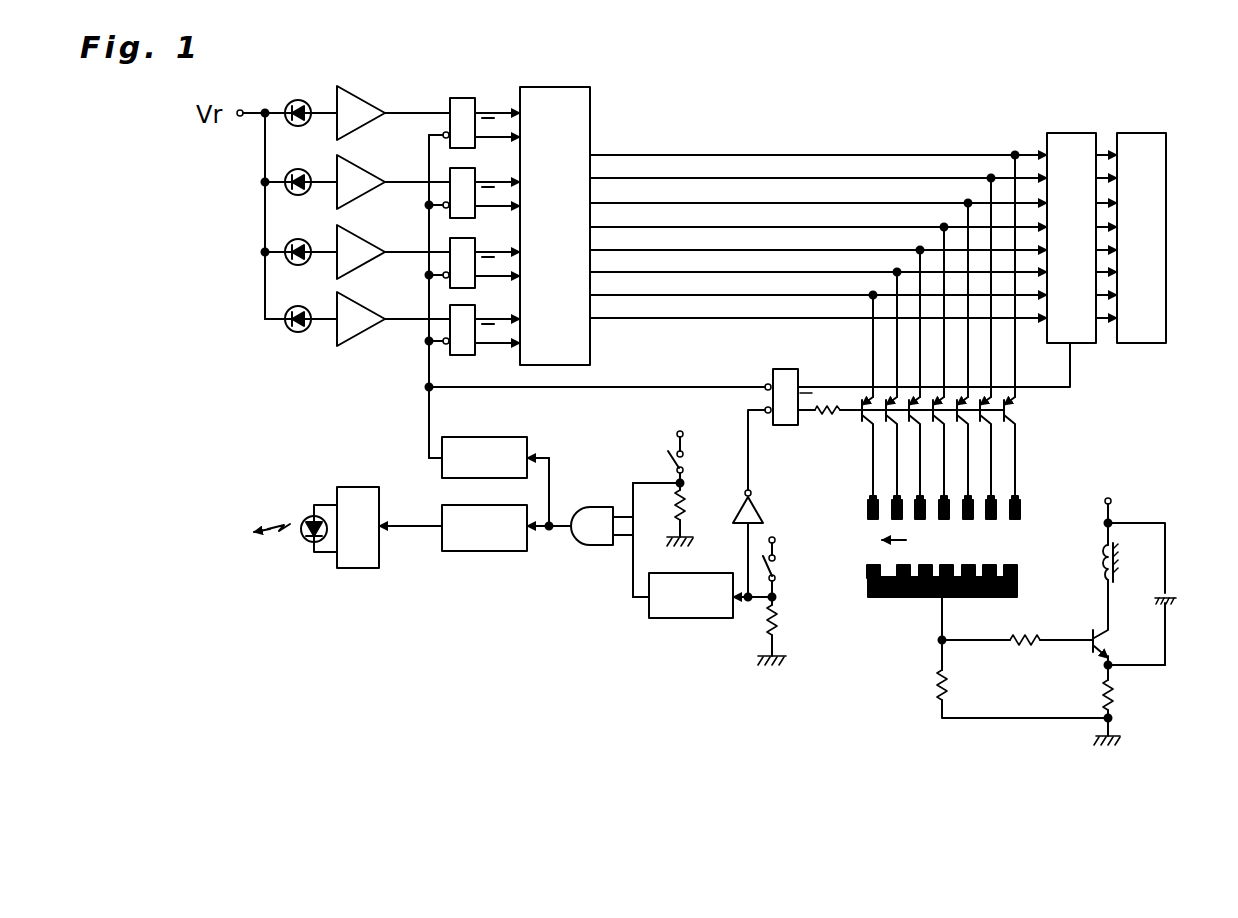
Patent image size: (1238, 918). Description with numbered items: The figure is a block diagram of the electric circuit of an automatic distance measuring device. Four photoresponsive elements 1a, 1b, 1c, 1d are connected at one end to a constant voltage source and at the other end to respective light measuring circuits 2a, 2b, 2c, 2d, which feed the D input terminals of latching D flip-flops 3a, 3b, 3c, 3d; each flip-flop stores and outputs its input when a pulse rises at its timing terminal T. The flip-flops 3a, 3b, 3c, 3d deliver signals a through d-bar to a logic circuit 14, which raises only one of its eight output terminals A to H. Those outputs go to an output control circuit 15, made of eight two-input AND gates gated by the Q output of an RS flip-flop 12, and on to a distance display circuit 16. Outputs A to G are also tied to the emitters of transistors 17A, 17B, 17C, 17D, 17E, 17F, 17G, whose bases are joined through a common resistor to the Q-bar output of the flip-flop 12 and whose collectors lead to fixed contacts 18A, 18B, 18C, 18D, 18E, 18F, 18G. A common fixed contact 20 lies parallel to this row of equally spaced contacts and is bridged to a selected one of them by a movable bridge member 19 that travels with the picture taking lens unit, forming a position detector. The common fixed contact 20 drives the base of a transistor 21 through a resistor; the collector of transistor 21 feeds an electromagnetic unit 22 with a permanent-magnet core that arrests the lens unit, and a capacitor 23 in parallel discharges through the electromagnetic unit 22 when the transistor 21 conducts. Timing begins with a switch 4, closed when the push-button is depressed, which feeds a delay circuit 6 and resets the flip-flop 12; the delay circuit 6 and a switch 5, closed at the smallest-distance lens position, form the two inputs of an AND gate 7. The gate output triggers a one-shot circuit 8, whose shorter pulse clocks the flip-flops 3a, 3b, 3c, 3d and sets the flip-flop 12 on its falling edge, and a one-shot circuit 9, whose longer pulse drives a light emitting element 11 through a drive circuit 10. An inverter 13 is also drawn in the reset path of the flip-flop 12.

The photoresponsive element 1a is at (306, 101).
The photoresponsive element 1b is at (306, 170).
The photoresponsive element 1c is at (306, 240).
The photoresponsive element 1d is at (306, 307).
The light measuring circuit 2a is at (364, 105).
The light measuring circuit 2b is at (364, 175).
The light measuring circuit 2c is at (364, 245).
The light measuring circuit 2d is at (364, 312).
The latching D flip-flop 3a is at (448, 147).
The latching D flip-flop 3b is at (448, 217).
The latching D flip-flop 3c is at (448, 288).
The latching D flip-flop 3d is at (448, 357).
The switch 4 is at (775, 572).
The switch 5 is at (687, 449).
The delay circuit 6 is at (690, 618).
The AND gate 7 is at (583, 546).
The one-shot circuit 8 is at (508, 437).
The one-shot circuit 9 is at (486, 552).
The drive circuit 10 is at (358, 568).
The light emitting element 11 is at (305, 545).
The RS flip-flop 12 is at (783, 369).
The inverter 13 is at (745, 493).
The logic circuit 14 is at (572, 87).
The output control circuit 15 is at (1070, 133).
The distance display circuit 16 is at (1145, 133).
The transistor 17A is at (1011, 416).
The transistor 17B is at (987, 421).
The transistor 17C is at (964, 421).
The transistor 17D is at (940, 421).
The transistor 17E is at (916, 422).
The transistor 17F is at (893, 421).
The transistor 17G is at (870, 421).
The fixed contact 18A is at (1020, 512).
The fixed contact 18B is at (993, 519).
The fixed contact 18C is at (970, 519).
The fixed contact 18D is at (946, 519).
The fixed contact 18E is at (905, 509).
The fixed contact 18F is at (893, 518).
The fixed contact 18G is at (868, 510).
The movable bridge member 19 is at (898, 548).
The common fixed contact 20 is at (895, 598).
The transistor 21 is at (1098, 656).
The electromagnetic unit 22 is at (1116, 546).
The capacitor 23 is at (1178, 600).